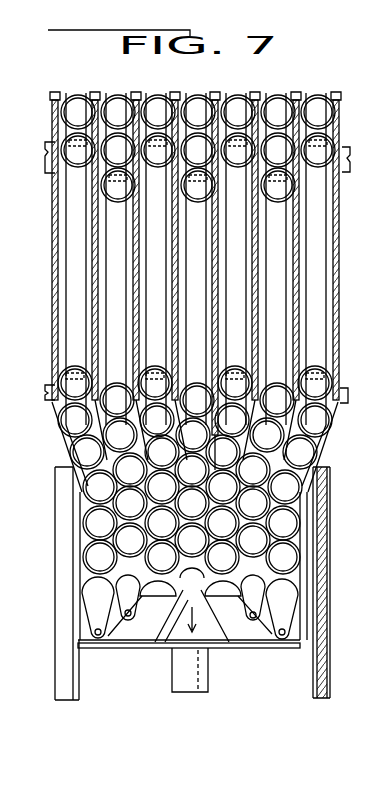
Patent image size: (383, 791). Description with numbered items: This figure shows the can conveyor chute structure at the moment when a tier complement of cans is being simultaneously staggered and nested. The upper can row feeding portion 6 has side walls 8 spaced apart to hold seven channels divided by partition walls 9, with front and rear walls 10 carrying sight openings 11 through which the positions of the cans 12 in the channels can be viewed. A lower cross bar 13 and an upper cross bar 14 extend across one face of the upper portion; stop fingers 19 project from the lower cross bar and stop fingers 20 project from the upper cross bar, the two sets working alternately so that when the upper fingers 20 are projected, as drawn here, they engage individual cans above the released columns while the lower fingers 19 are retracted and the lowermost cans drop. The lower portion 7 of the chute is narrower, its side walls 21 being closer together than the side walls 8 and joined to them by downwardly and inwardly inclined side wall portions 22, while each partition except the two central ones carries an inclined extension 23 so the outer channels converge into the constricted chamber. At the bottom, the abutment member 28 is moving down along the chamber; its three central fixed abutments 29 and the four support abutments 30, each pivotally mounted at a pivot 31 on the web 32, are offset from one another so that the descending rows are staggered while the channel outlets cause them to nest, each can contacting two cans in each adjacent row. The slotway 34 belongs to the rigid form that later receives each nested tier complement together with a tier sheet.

The upper can row feeding portion 6 is at (56, 109).
The lower portion of the chute structure 7 is at (315, 672).
The side walls 8 is at (53, 277).
The partition walls 9 is at (173, 92).
The front and rear walls 10 is at (228, 97).
The sight openings 11 is at (318, 95).
The cans 12 is at (90, 518).
The lower cross bar 13 is at (46, 396).
The upper cross bar 14 is at (47, 158).
The stop fingers 19 is at (73, 373).
The stop fingers 20 is at (72, 157).
The side walls 21 is at (77, 540).
The inclined side wall portions 22 is at (58, 466).
The inclined extension 23 is at (62, 436).
The abutment member 28 is at (166, 648).
The fixed abutments 29 is at (183, 592).
The support abutment 30 is at (92, 592).
The pivot 31 is at (128, 620).
The web 32 is at (233, 636).
The slotway 34 is at (60, 655).